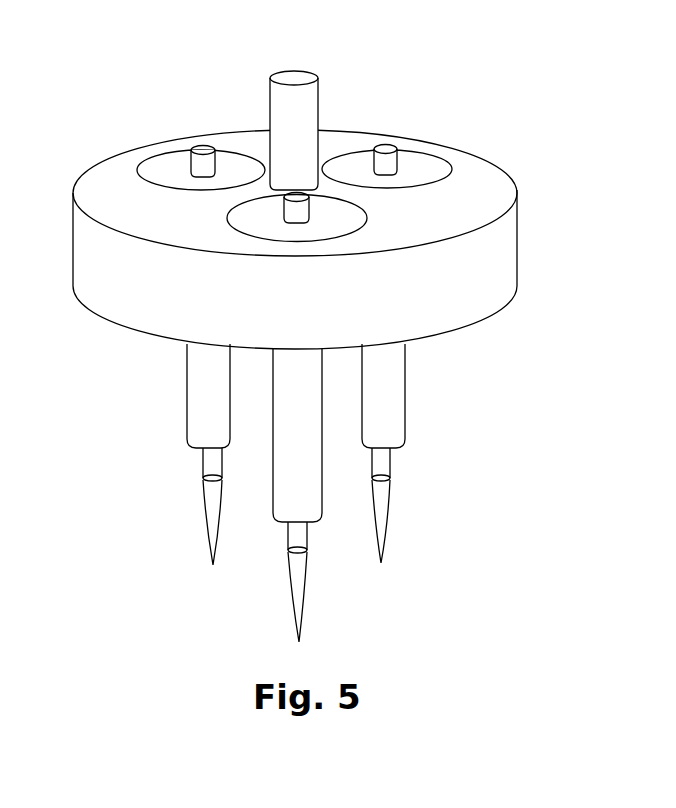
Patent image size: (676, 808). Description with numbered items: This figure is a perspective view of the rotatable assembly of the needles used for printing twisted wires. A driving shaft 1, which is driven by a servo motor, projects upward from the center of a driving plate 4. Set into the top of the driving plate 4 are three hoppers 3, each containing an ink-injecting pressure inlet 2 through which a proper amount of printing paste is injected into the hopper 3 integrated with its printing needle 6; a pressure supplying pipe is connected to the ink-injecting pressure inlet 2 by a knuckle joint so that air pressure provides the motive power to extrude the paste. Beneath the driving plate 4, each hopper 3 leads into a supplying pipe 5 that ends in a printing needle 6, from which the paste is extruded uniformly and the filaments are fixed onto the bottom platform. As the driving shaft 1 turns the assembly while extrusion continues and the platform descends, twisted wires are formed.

The driving shaft 1 is at (325, 78).
The ink-injecting pressure inlet 2 is at (397, 143).
The hopper 3 is at (433, 163).
The driving plate 4 is at (460, 213).
The supplying pipe 5 is at (398, 382).
The printing needle 6 is at (390, 510).